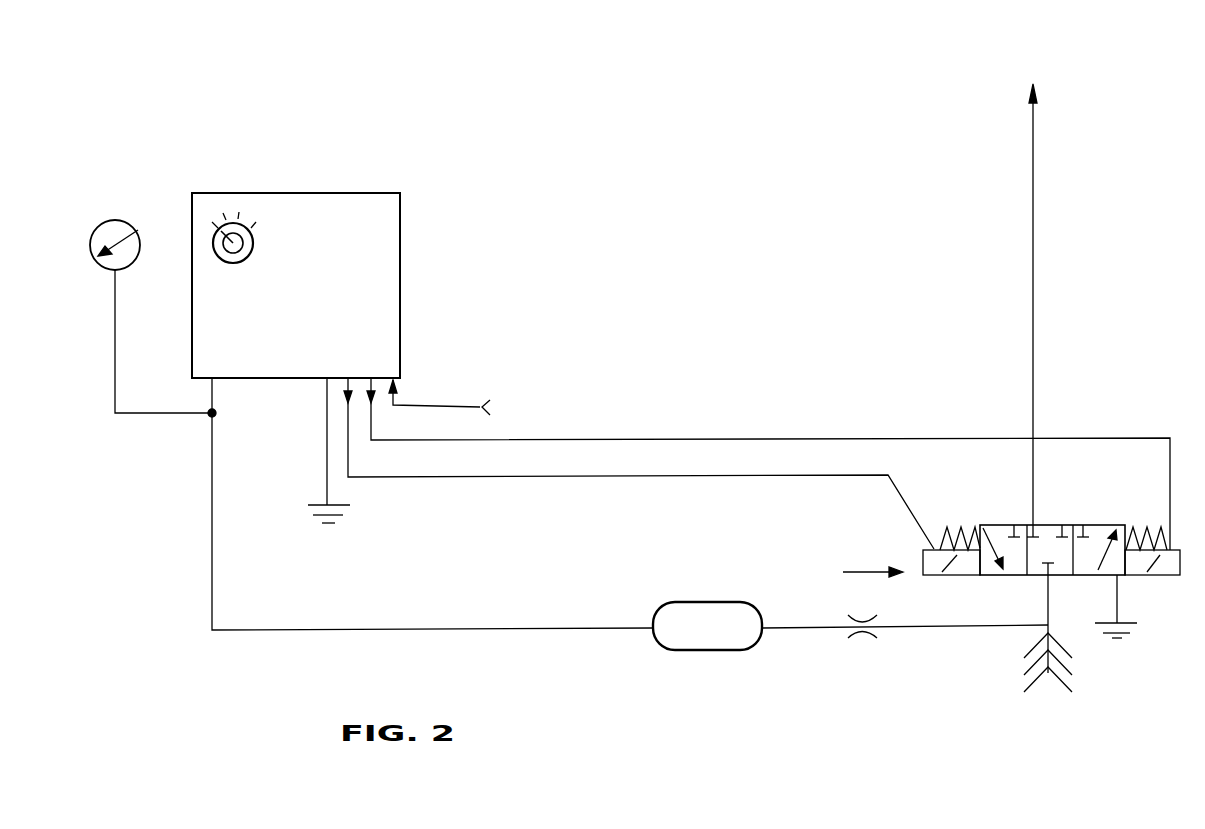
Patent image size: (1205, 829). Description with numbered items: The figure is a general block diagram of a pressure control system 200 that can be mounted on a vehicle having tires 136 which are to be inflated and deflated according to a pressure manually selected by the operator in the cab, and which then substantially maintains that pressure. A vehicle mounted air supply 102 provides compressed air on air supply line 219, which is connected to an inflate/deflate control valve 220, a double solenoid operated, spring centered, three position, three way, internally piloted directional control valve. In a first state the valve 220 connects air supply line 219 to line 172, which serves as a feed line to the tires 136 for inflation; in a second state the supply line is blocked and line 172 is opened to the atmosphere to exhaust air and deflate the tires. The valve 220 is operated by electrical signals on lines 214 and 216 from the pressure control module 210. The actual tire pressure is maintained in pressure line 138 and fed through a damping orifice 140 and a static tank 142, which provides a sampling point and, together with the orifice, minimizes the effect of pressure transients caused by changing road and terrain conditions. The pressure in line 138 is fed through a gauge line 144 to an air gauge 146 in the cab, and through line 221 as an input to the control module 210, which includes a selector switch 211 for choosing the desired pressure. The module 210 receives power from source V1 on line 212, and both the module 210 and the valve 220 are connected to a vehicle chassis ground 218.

The pressure control system 200 is at (175, 660).
The pressure control module 210 is at (387, 193).
The selector switch 211 is at (238, 262).
The air gauge 146 is at (100, 267).
The gauge line 144 is at (148, 415).
The line 221 is at (215, 400).
The pressure line 138 is at (210, 565).
The vehicle chassis ground 218 is at (348, 512).
The line 212 is at (452, 405).
The line 216 is at (673, 437).
The line 214 is at (668, 477).
The air supply line 219 is at (1034, 317).
The vehicle mounted air supply 102 is at (1033, 95).
The line 172 is at (1047, 603).
The inflate/deflate control valve 220 is at (1161, 571).
The tires 136 is at (1075, 665).
The static tank 142 is at (670, 648).
The damping orifice 140 is at (868, 618).